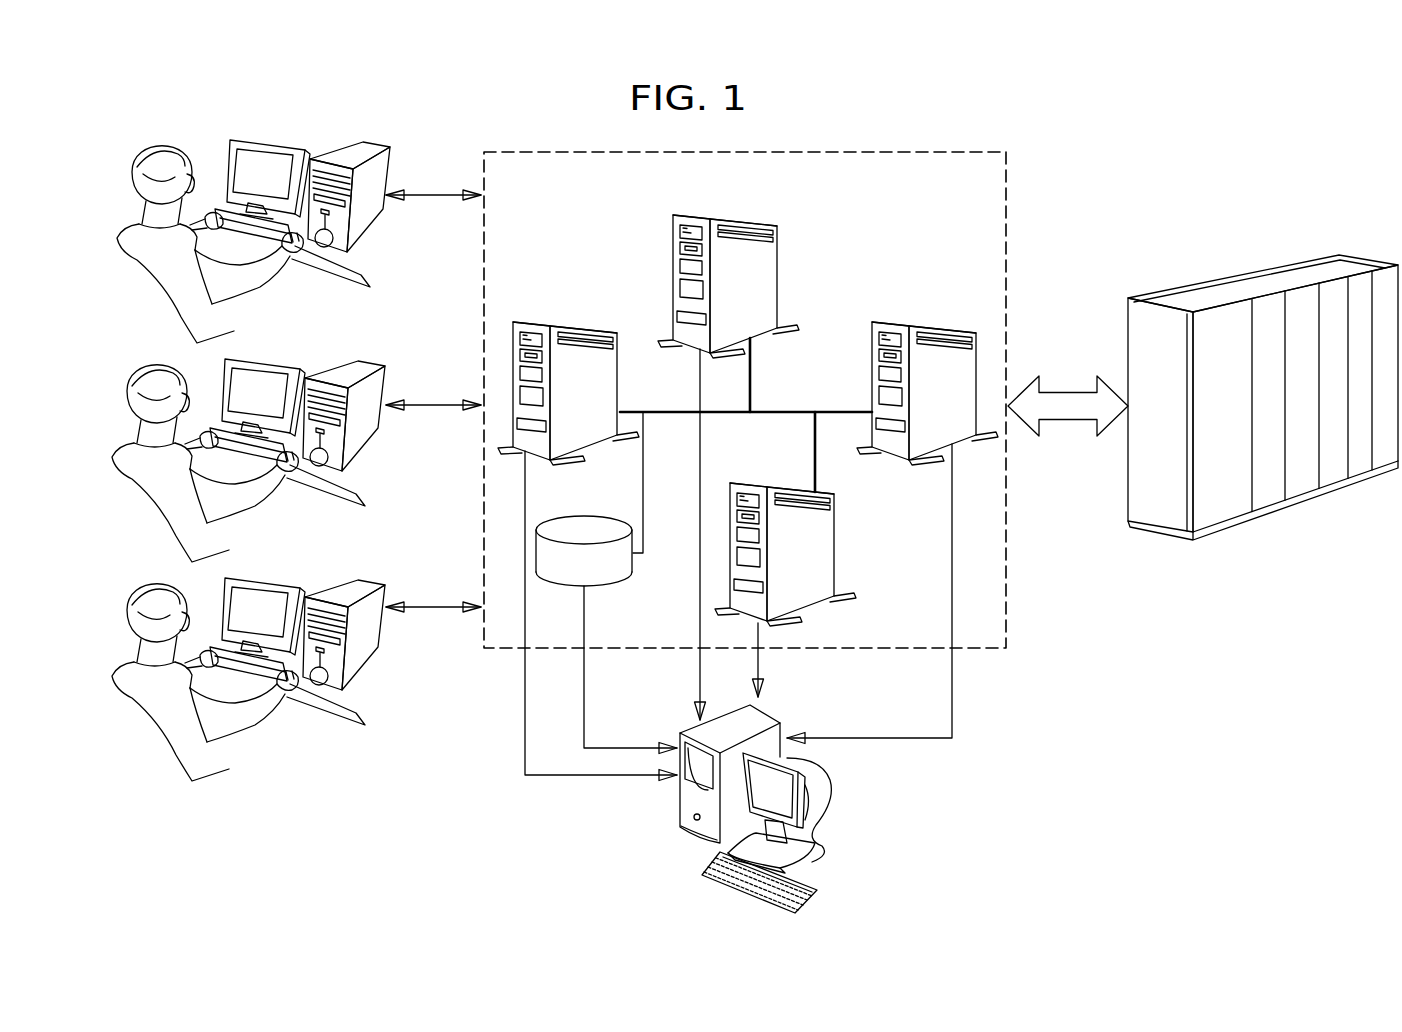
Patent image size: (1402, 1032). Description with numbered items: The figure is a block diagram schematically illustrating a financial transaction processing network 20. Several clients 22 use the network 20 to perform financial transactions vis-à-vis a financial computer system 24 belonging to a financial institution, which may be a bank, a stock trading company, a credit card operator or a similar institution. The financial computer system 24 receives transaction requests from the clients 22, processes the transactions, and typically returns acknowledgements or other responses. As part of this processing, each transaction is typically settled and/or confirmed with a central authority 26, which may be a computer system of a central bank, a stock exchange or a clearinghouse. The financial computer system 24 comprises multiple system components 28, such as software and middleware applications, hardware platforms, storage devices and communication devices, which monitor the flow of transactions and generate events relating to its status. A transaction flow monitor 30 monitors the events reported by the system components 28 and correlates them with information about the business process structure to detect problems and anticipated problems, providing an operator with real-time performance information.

The financial transaction processing network 20 is at (1217, 105).
The clients 22 is at (153, 147).
The financial computer system 24 is at (529, 151).
The central authority 26 is at (1138, 465).
The system components 28 is at (585, 437).
The transaction flow monitor 30 is at (777, 717).